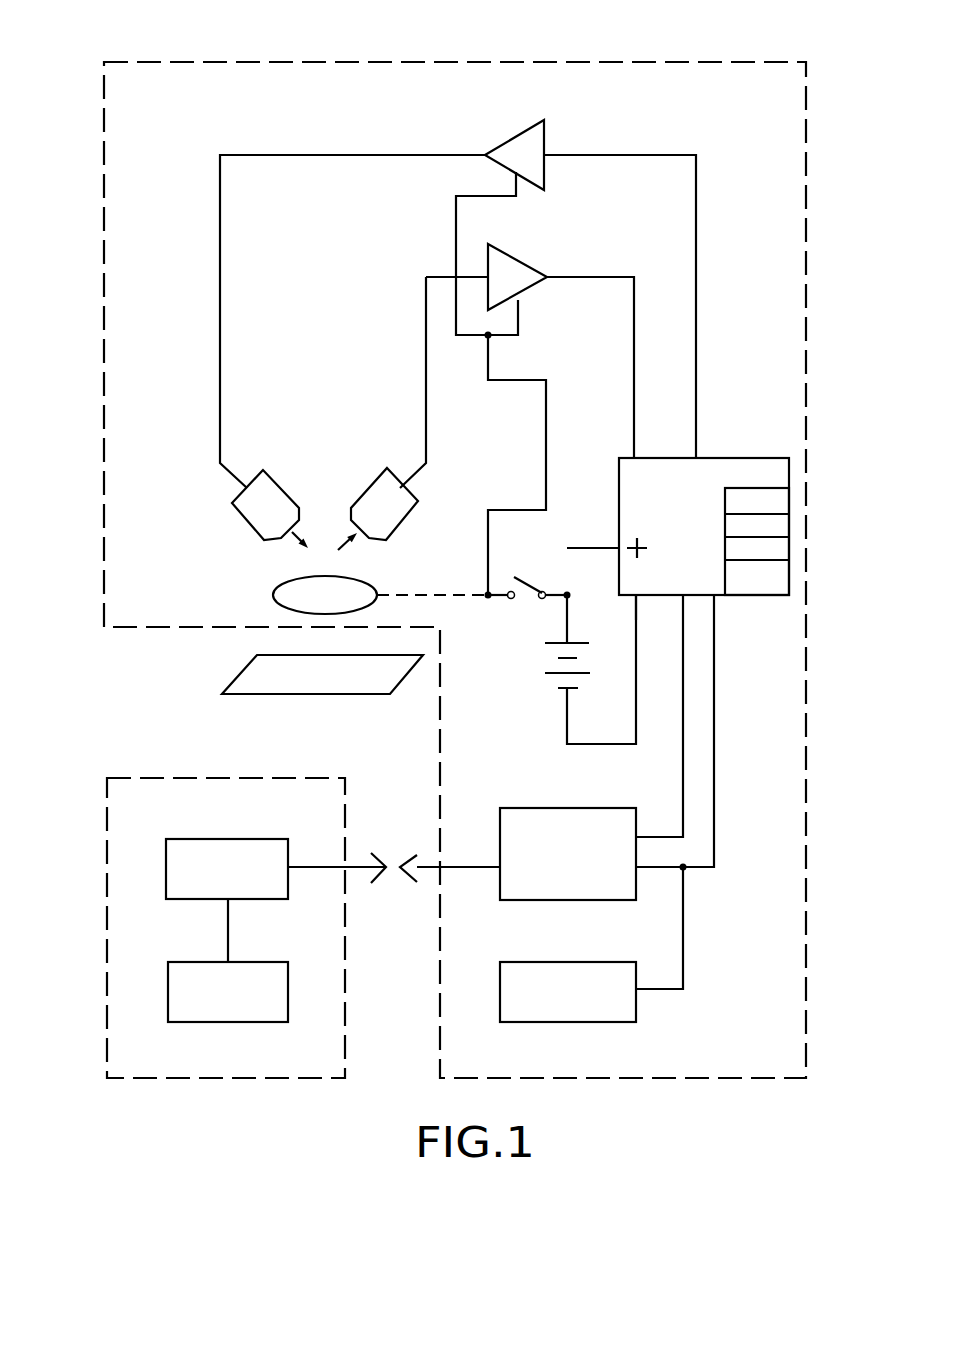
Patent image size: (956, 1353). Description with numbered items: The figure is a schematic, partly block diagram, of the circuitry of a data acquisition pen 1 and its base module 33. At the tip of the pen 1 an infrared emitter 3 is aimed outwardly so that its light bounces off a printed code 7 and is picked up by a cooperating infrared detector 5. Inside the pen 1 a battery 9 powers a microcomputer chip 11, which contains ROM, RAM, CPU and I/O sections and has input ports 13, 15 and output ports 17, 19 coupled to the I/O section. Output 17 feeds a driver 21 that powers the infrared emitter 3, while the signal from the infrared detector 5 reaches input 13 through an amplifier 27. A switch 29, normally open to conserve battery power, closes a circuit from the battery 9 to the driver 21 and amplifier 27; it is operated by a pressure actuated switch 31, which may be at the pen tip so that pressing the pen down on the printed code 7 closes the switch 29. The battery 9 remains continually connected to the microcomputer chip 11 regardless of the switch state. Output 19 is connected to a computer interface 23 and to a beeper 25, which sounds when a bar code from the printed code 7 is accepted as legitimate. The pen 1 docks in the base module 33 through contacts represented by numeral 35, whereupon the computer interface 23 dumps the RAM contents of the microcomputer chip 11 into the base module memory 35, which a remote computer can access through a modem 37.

The data acquisition pen 1 is at (170, 62).
The infrared emitter 3 is at (283, 470).
The infrared detector 5 is at (375, 468).
The printed code 7 is at (240, 675).
The battery 9 is at (560, 697).
The microcomputer chip 11 is at (691, 532).
The input port 13 is at (630, 456).
The input port 15 is at (680, 598).
The output port 17 is at (692, 456).
The output port 19 is at (710, 598).
The driver 21 is at (546, 140).
The computer interface 23 is at (502, 807).
The beeper 25 is at (637, 1010).
The amplifier 27 is at (530, 253).
The switch 29 is at (528, 567).
The pressure actuated switch 31 is at (363, 580).
The base module 33 is at (197, 1082).
The memory 35 is at (192, 900).
The modem 37 is at (195, 1023).